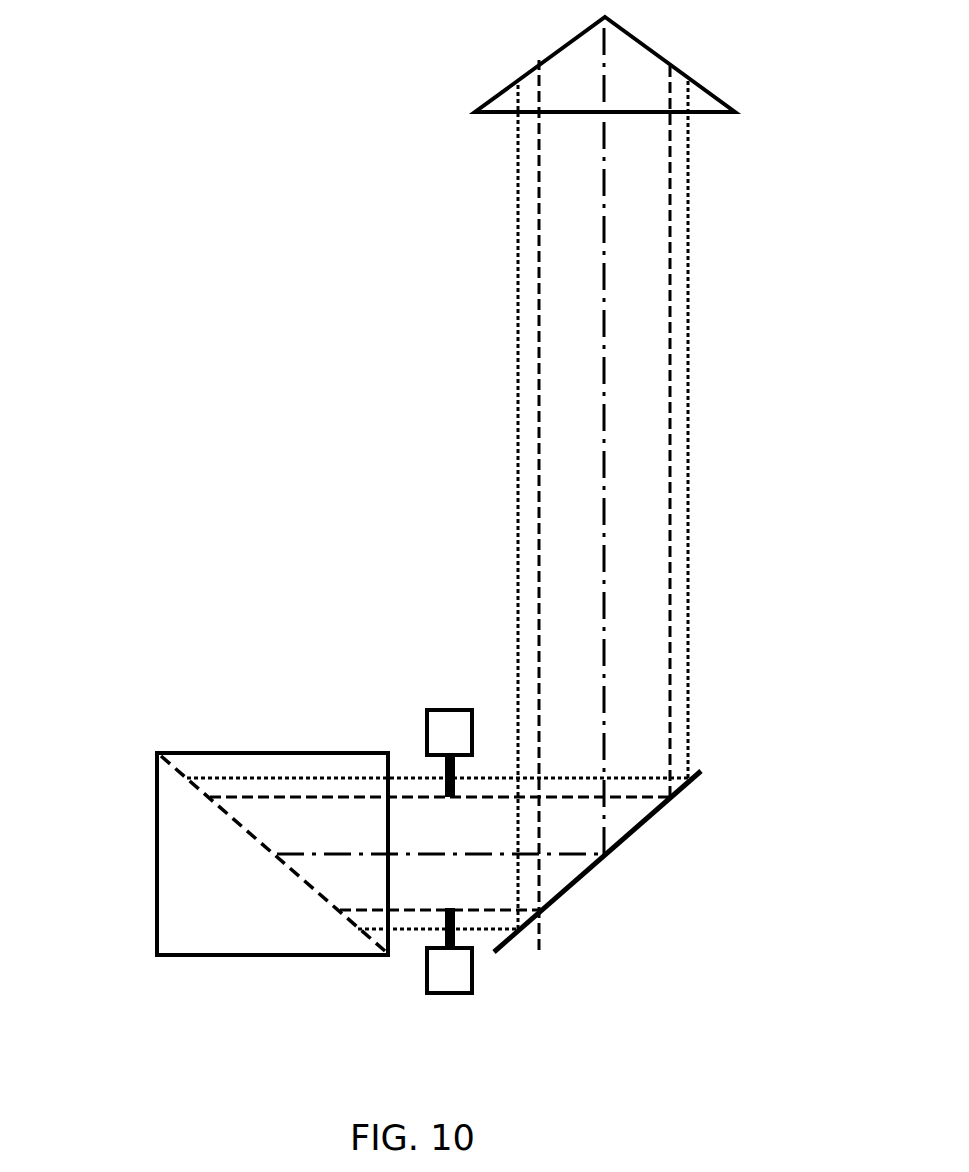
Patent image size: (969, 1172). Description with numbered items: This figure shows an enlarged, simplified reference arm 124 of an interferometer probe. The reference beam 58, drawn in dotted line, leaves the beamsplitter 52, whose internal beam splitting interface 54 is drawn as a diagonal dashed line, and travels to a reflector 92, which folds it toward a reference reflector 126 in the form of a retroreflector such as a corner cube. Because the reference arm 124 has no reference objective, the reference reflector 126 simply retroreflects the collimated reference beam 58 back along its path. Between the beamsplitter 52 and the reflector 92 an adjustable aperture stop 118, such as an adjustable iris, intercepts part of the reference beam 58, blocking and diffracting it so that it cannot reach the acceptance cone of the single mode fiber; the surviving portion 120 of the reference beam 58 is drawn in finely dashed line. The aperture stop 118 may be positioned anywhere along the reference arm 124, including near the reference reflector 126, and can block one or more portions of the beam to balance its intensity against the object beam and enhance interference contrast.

The beamsplitter 52 is at (158, 884).
The beam splitting interface 54 is at (243, 827).
The reference beam 58 is at (690, 358).
The reflector 92 is at (648, 823).
The adjustable aperture stop 118 is at (473, 980).
The surviving portion of the reference beam 120 is at (528, 213).
The reference arm 124 is at (404, 278).
The reference reflector 126 is at (553, 60).